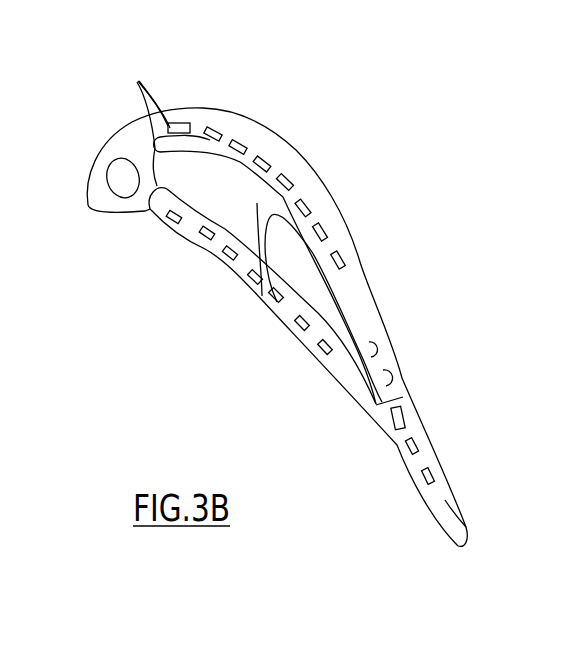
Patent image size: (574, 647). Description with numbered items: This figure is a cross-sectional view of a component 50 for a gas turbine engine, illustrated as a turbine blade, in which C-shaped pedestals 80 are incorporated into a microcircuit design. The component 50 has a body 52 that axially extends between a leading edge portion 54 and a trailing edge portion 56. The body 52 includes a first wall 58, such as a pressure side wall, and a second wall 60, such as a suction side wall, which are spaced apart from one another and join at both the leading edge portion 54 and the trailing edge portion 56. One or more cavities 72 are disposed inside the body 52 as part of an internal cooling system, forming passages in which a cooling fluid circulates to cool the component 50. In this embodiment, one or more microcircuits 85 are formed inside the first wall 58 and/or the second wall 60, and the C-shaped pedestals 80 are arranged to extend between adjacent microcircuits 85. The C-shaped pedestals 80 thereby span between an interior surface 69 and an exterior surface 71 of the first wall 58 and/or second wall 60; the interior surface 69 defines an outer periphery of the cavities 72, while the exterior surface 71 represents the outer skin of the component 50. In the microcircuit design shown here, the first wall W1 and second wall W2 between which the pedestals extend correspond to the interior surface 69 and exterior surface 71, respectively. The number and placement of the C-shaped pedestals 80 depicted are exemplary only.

The component 50 is at (247, 99).
The body 52 is at (393, 298).
The leading edge portion 54 is at (107, 150).
The trailing edge portion 56 is at (460, 547).
The first wall 58 is at (236, 278).
The second wall 60 is at (361, 264).
The interior surface 69 is at (155, 208).
The exterior surface 71 is at (153, 228).
The cavities 72 is at (125, 178).
The C-shaped pedestals 80 is at (205, 121).
The microcircuits 85 is at (430, 470).
The first wall W1 is at (393, 380).
The second wall W2 is at (392, 338).